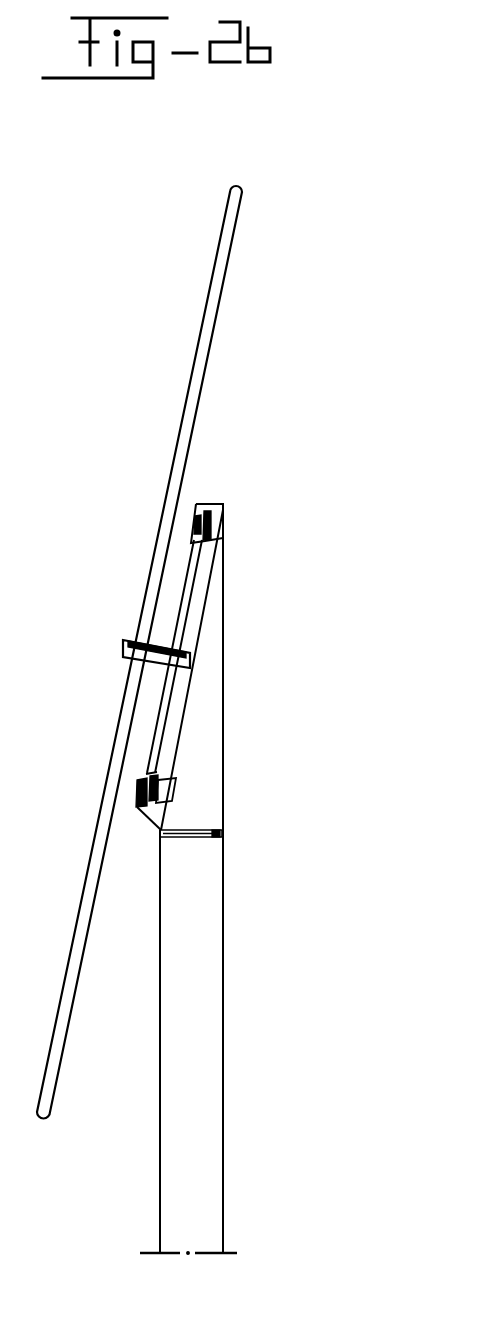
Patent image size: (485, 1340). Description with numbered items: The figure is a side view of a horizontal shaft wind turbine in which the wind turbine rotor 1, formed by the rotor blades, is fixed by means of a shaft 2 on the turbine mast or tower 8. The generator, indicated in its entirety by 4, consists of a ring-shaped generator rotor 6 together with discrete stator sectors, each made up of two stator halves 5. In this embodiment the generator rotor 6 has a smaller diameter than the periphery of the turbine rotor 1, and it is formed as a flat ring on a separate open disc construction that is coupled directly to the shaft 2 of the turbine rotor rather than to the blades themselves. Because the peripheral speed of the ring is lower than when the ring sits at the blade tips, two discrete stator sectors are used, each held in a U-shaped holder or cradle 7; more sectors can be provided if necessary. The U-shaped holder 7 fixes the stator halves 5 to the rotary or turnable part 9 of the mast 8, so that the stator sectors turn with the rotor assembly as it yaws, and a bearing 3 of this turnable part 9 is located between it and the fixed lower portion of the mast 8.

The wind turbine rotor 1 is at (207, 308).
The shaft 2 is at (123, 648).
The bearing 3 is at (222, 837).
The generator 4 is at (209, 497).
The stator halves 5 is at (193, 522).
The generator rotor 6 is at (150, 815).
The U-shaped holder 7 is at (160, 800).
The mast 8 is at (208, 1060).
The turnable part of the mast 9 is at (208, 735).